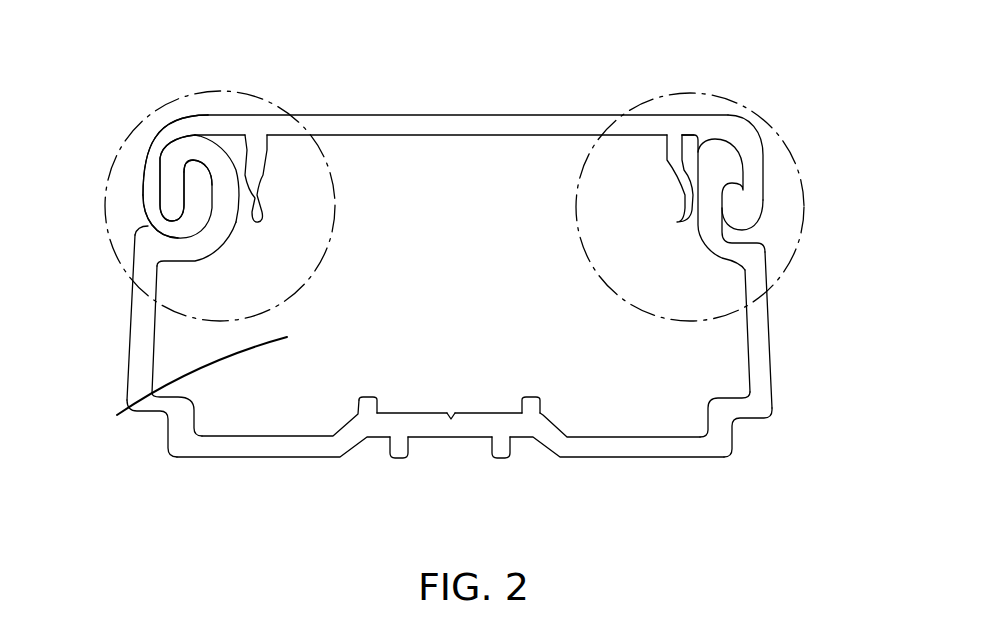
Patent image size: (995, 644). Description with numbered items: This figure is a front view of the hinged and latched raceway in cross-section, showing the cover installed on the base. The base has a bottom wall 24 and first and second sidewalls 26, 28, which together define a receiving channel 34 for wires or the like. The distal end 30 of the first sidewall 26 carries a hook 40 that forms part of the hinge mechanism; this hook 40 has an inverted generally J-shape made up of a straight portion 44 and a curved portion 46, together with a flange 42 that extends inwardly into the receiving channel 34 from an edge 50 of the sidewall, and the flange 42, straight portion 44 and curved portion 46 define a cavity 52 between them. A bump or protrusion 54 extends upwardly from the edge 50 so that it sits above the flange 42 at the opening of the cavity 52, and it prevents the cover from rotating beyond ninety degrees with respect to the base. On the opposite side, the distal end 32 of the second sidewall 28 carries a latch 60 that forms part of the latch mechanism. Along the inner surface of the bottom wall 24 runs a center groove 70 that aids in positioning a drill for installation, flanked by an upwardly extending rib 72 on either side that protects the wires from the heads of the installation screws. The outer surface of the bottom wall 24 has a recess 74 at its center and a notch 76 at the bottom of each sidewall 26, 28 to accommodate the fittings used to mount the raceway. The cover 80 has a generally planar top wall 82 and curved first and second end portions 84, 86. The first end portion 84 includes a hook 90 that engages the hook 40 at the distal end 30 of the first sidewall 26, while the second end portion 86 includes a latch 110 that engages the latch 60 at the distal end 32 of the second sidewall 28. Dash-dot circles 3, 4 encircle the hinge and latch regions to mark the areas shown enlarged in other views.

The detail circle of FIG. 3 is at (262, 96).
The detail circle of FIG. 4 is at (714, 98).
The bottom wall 24 is at (255, 446).
The first sidewall 26 is at (142, 372).
The second sidewall 28 is at (760, 365).
The distal end of first sidewall 30 is at (157, 193).
The distal end of second sidewall 32 is at (743, 185).
The receiving channel 34 is at (185, 384).
The hook 40 is at (187, 147).
The flange 42 is at (177, 253).
The straight portion 44 is at (168, 169).
The curved portion 46 is at (223, 218).
The edge of the sidewall 50 is at (136, 239).
The cavity 52 is at (205, 173).
The protrusion 54 is at (143, 230).
The latch 60 is at (727, 200).
The groove 70 is at (452, 407).
The rib 72 is at (369, 402).
The recess 74 is at (448, 443).
The notch 76 is at (153, 425).
The cover 80 is at (502, 117).
The top wall 82 is at (432, 122).
The first end portion 84 is at (157, 142).
The second end portion 86 is at (733, 125).
The hook 90 is at (148, 140).
The latch 110 is at (752, 160).